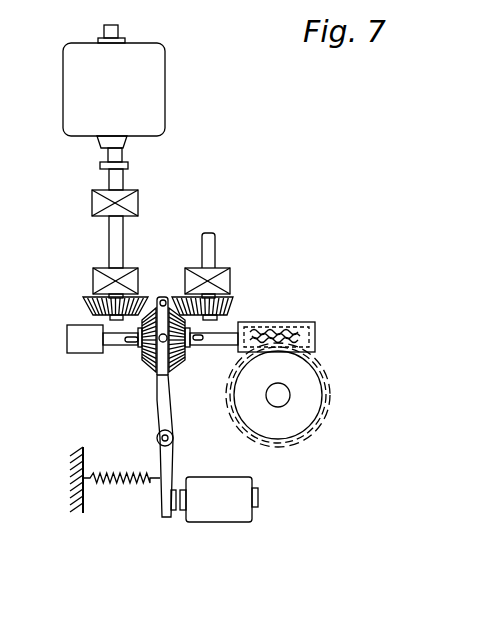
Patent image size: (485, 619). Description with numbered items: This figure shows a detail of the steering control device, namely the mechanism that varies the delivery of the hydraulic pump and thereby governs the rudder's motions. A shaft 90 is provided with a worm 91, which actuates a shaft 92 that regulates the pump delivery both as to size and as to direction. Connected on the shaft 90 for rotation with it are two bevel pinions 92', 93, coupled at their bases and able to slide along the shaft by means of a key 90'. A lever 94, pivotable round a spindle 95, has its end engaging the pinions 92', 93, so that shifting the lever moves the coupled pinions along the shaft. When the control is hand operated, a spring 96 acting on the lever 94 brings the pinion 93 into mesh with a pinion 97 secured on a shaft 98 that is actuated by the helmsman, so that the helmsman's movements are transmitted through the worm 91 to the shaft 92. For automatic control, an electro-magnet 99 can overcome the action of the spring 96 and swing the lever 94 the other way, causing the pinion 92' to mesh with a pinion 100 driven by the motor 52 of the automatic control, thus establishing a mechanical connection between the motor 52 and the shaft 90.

The motor 52 is at (165, 92).
The shaft 90 is at (102, 357).
The key 90' is at (115, 371).
The worm 91 is at (307, 321).
The shaft 92 is at (302, 395).
The bevel pinion 92' is at (134, 361).
The bevel pinion 93 is at (175, 368).
The lever 94 is at (171, 418).
The spindle 95 is at (157, 440).
The spring 96 is at (115, 482).
The pinion 97 is at (237, 302).
The shaft 98 is at (216, 250).
The electro-magnet 99 is at (227, 518).
The pinion 100 is at (88, 306).